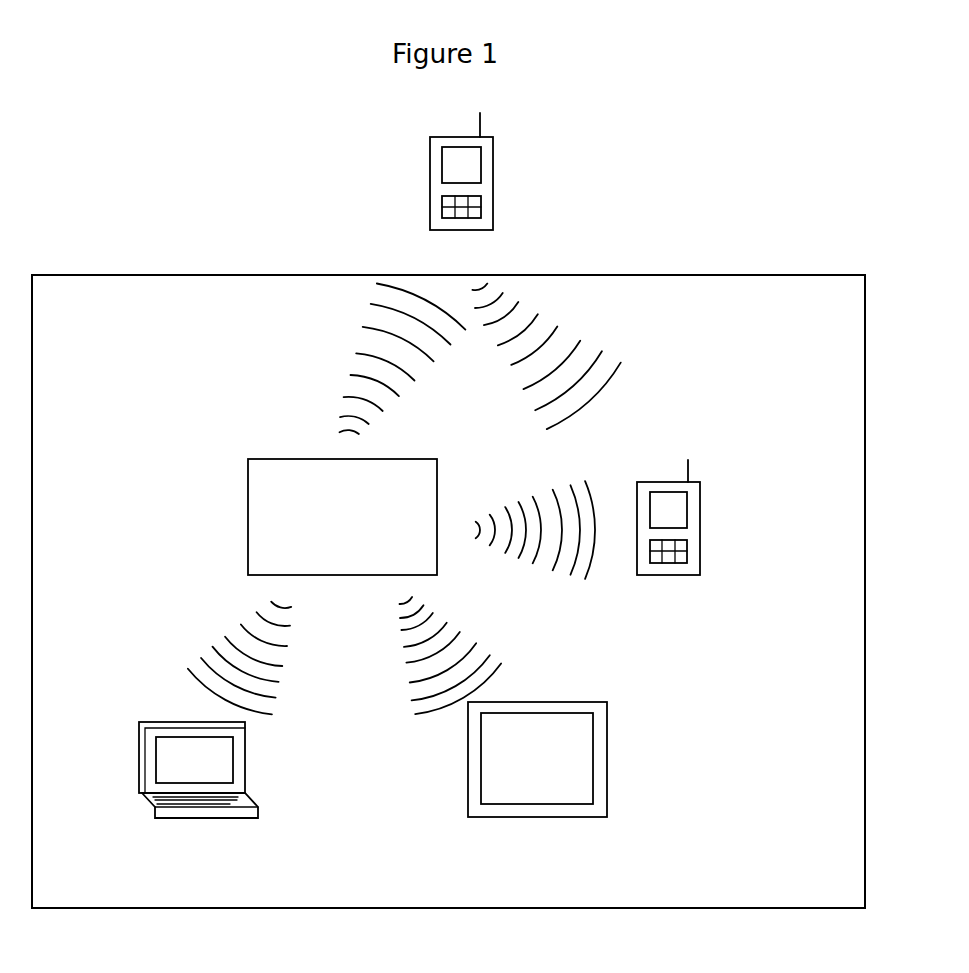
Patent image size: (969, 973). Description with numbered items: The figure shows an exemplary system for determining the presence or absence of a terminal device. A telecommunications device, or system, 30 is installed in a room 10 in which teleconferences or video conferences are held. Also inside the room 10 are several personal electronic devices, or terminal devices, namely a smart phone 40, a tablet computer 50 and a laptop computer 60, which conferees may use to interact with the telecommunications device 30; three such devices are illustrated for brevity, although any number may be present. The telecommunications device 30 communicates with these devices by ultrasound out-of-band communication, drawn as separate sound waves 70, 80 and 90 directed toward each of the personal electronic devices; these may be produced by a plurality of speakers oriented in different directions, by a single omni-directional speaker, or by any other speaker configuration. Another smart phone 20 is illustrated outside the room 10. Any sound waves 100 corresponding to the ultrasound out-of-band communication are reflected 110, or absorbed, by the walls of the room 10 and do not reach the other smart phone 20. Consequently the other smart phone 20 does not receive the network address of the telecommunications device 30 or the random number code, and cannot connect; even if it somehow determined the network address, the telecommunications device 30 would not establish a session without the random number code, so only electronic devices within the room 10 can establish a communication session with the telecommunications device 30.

The room 10 is at (110, 275).
The other smart phone 20 is at (430, 160).
The telecommunications device 30 is at (342, 517).
The smart phone 40 is at (702, 508).
The tablet computer 50 is at (608, 742).
The laptop computer 60 is at (245, 770).
The sound wave 70 is at (239, 658).
The sound wave 80 is at (451, 655).
The sound wave 90 is at (535, 527).
The sound waves 100 is at (388, 359).
The reflected sound waves 110 is at (546, 357).